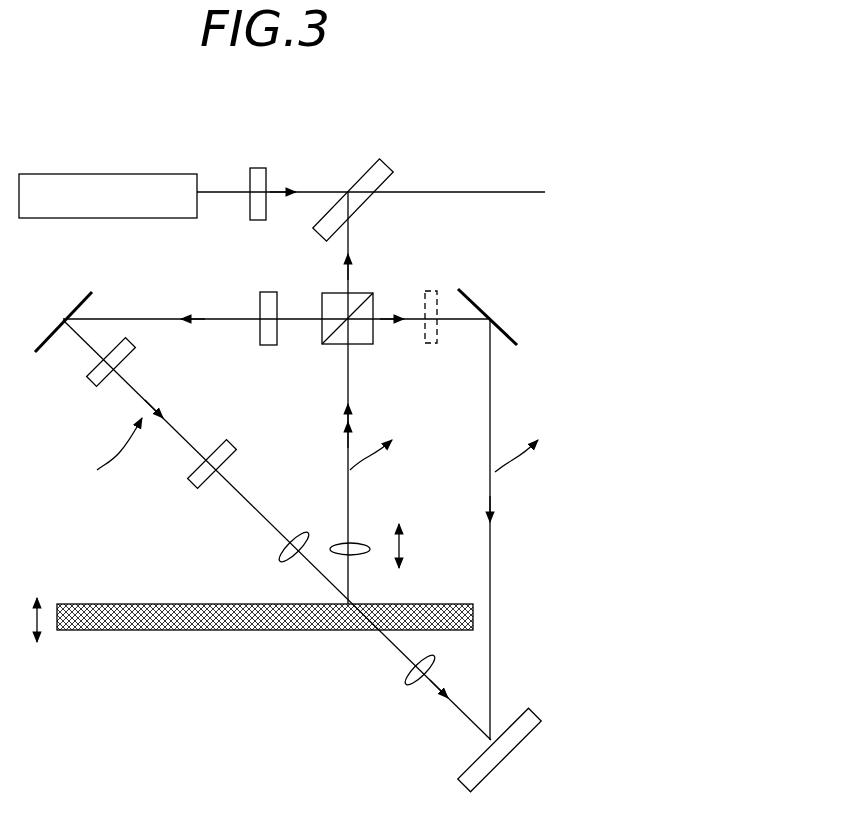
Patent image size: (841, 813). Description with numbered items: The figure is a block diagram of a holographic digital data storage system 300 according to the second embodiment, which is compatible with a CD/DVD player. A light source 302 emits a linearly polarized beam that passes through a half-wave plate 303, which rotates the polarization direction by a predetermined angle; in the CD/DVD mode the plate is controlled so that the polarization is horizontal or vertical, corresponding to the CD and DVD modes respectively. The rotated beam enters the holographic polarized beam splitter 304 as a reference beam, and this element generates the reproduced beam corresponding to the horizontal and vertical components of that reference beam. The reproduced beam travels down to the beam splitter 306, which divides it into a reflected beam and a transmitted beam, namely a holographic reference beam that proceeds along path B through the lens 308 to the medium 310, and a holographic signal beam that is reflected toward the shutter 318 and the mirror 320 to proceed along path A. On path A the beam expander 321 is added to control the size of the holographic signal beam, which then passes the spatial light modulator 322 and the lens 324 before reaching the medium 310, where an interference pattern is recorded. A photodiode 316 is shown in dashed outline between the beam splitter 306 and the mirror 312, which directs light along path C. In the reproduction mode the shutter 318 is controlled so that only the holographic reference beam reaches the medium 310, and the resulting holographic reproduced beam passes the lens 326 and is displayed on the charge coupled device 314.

The holographic digital data storage system 300 is at (452, 97).
The light source 302 is at (148, 174).
The λ/2 plate 303 is at (259, 167).
The holographic polarized beam splitter 304 is at (370, 167).
The beam splitter 306 is at (362, 292).
The lens 308 is at (368, 545).
The medium 310 is at (226, 632).
The mirror 312 is at (506, 328).
The charge coupled device (CCD) 314 is at (524, 746).
The photodiode (PD) 316 is at (432, 290).
The shutter 318 is at (265, 291).
The mirror 320 is at (56, 332).
The beam expander 321 is at (88, 380).
The spatial light modulator (SLM) 322 is at (192, 484).
The lens 324 is at (282, 556).
The lens 326 is at (410, 684).